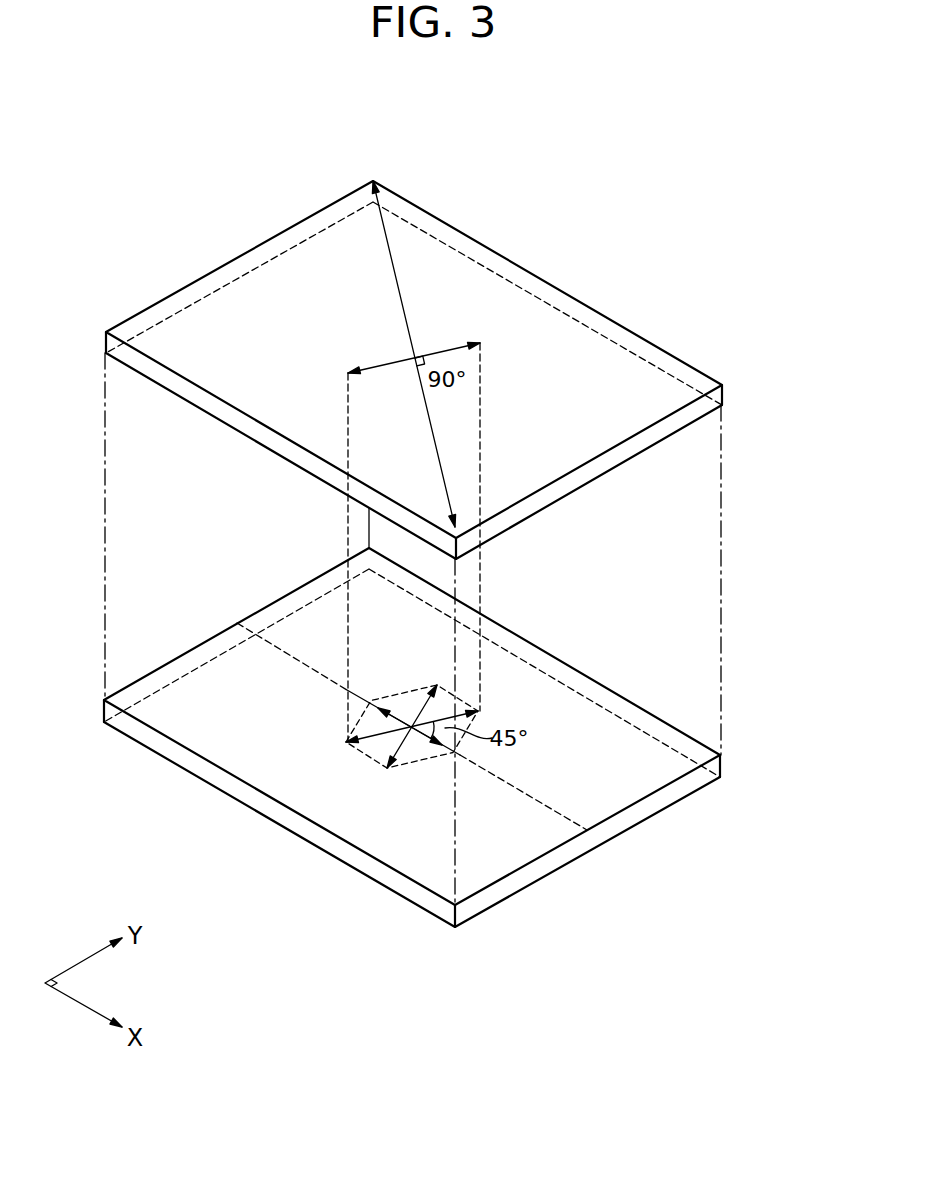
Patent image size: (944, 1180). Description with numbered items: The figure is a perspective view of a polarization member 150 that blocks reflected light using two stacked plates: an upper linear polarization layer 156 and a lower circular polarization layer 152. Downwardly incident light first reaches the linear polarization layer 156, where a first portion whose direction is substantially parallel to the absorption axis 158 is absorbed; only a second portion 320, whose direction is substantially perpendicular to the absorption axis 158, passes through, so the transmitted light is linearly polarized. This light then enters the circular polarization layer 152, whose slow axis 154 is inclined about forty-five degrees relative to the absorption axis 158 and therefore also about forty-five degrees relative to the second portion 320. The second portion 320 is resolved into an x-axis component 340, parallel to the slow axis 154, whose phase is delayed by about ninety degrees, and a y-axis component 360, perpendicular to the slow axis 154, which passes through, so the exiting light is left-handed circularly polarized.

The polarization member 150 is at (583, 245).
The circular polarization layer 152 is at (203, 770).
The slow axis 154 is at (275, 645).
The linear polarization layer 156 is at (205, 401).
The absorption axis 158 is at (392, 257).
The second portion of incident light 320 is at (387, 363).
The x-axis component 340 is at (427, 740).
The y-axis component 360 is at (420, 708).